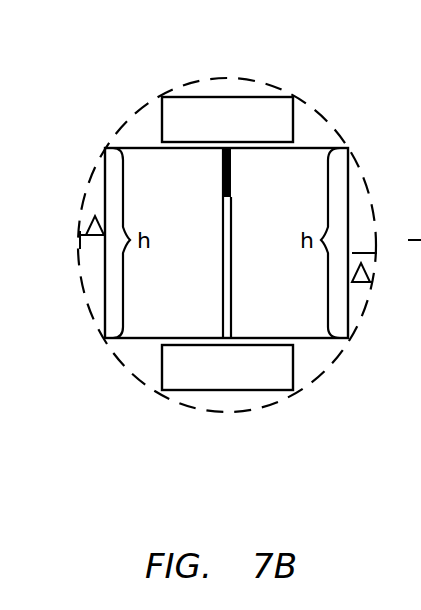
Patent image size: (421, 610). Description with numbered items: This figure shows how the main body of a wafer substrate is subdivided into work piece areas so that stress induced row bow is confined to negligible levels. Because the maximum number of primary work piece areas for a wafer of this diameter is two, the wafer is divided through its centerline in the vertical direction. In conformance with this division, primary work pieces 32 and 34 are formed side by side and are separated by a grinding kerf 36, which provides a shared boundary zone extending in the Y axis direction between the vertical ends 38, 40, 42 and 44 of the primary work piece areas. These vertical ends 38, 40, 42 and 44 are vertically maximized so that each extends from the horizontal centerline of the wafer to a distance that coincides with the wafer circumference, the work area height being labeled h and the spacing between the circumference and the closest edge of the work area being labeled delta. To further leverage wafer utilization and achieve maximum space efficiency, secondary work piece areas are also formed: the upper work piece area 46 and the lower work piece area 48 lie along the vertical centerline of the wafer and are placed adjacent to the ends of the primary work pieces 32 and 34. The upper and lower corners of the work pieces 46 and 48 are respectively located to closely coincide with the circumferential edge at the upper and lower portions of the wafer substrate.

The work piece 32 is at (117, 172).
The work piece 34 is at (337, 173).
The grinding kerf 36 is at (231, 197).
The vertical end 38 is at (138, 135).
The vertical end 40 is at (141, 343).
The vertical end 42 is at (314, 135).
The vertical end 44 is at (312, 342).
The upper work piece area 46 is at (245, 100).
The lower work piece area 48 is at (259, 378).